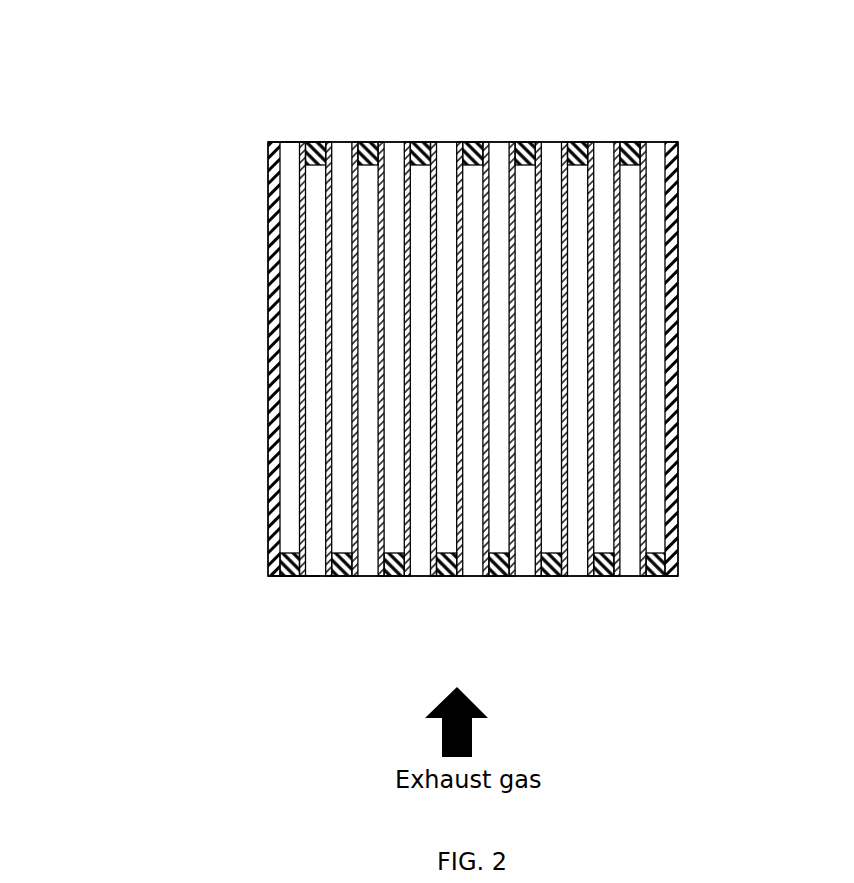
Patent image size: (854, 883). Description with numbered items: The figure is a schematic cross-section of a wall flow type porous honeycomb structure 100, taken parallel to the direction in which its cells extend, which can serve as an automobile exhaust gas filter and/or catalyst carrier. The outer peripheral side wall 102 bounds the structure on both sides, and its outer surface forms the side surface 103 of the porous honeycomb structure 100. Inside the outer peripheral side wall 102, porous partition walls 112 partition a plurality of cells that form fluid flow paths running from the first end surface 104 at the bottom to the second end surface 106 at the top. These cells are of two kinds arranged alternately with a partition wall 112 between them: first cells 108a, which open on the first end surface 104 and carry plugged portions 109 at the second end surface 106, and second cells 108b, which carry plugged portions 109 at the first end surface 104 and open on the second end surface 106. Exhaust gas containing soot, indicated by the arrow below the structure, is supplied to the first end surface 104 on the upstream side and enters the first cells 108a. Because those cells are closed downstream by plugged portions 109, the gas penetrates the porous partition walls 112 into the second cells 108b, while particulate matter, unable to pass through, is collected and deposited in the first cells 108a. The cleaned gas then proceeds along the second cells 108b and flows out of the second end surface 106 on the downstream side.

The porous honeycomb structure 100 is at (453, 113).
The outer peripheral side wall 102 is at (673, 141).
The side surface 103 is at (268, 190).
The first end surface 104 is at (292, 586).
The second end surface 106 is at (290, 125).
The first cells 108a is at (370, 572).
The second cells 108b is at (346, 148).
The plugged portions 109 is at (632, 142).
The partition walls 112 is at (300, 304).